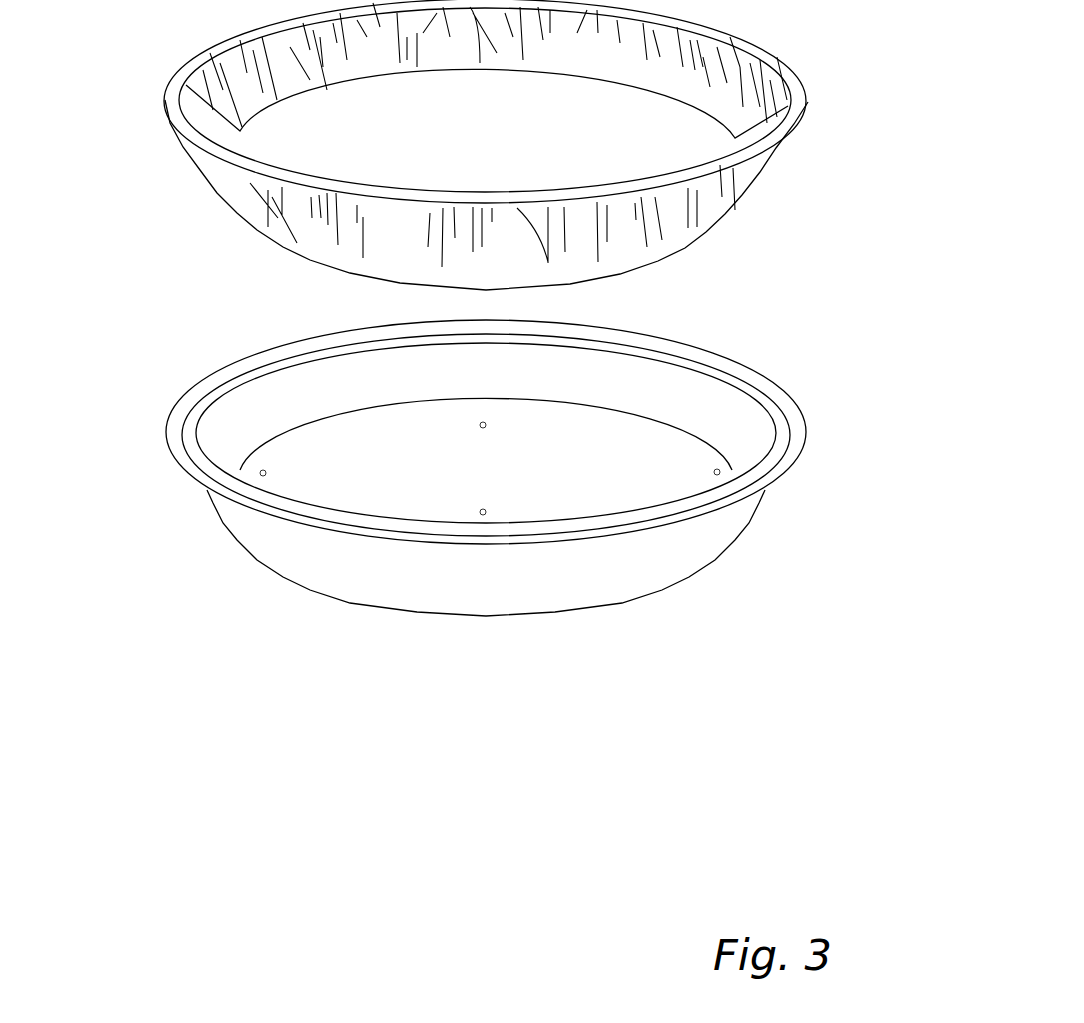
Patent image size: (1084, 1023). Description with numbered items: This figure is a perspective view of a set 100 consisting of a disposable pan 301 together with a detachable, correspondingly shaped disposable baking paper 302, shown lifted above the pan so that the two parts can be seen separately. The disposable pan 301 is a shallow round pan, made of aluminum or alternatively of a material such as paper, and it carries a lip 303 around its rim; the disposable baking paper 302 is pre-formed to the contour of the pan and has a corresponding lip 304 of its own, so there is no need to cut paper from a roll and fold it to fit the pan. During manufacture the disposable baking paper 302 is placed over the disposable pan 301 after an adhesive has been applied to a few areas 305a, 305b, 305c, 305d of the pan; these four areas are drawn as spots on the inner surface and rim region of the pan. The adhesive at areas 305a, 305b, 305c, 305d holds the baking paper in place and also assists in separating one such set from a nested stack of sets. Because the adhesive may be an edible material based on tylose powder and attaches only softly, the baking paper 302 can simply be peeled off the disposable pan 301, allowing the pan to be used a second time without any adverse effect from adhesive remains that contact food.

The container assembly 100 is at (235, 873).
The disposable pan 301 is at (617, 585).
The disposable baking paper 302 is at (732, 197).
The lip 303 is at (693, 507).
The lip 304 is at (798, 116).
The adhesive area 305a is at (717, 472).
The adhesive area 305b is at (483, 425).
The adhesive area 305c is at (263, 473).
The adhesive area 305d is at (483, 512).